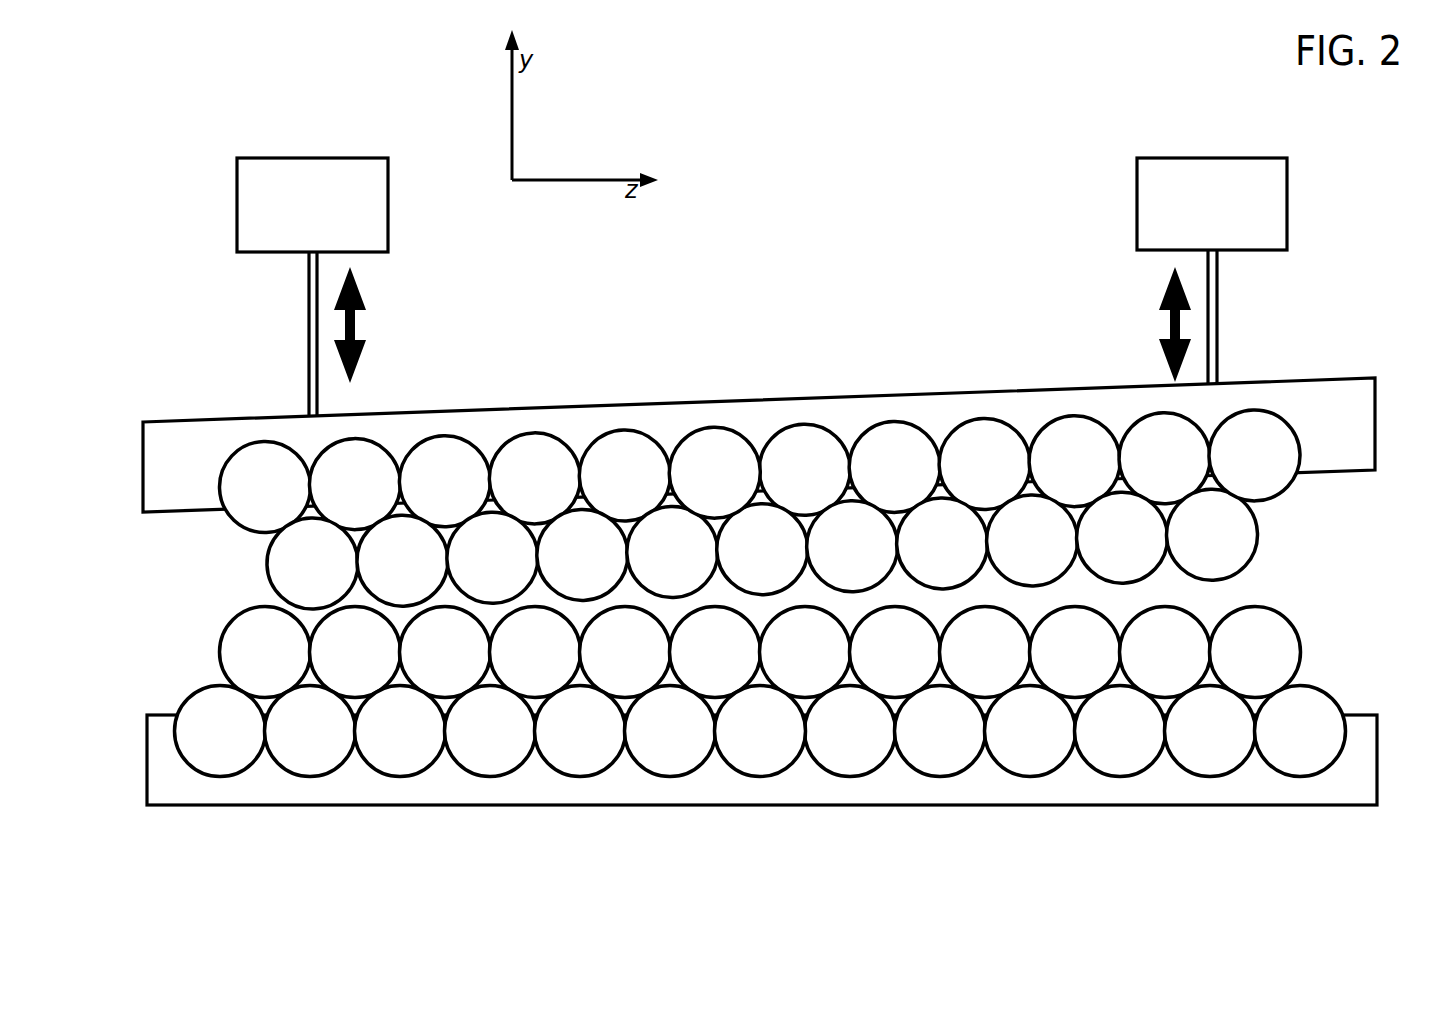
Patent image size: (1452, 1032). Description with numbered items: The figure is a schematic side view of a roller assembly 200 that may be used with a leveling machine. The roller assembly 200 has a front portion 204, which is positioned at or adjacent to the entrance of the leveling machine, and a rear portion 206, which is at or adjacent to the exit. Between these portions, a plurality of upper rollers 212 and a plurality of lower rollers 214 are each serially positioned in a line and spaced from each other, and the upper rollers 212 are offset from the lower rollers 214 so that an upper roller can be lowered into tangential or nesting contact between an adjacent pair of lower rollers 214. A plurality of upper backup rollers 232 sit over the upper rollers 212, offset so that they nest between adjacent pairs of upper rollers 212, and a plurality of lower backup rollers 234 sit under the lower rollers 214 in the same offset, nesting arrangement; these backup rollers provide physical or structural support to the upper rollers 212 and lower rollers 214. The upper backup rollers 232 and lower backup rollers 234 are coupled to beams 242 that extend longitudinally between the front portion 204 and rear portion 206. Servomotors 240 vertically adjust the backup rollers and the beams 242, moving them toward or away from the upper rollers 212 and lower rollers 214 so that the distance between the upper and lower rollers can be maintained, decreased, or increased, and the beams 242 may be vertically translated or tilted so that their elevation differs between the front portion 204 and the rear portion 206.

The roller assembly 200 is at (220, 103).
The front portion 204 is at (172, 856).
The rear portion 206 is at (1330, 856).
The upper rollers 212 is at (774, 459).
The lower rollers 214 is at (785, 712).
The upper backup rollers 232 is at (705, 434).
The lower backup rollers 234 is at (779, 772).
The servomotors 240 is at (258, 158).
The beams 242 is at (205, 419).